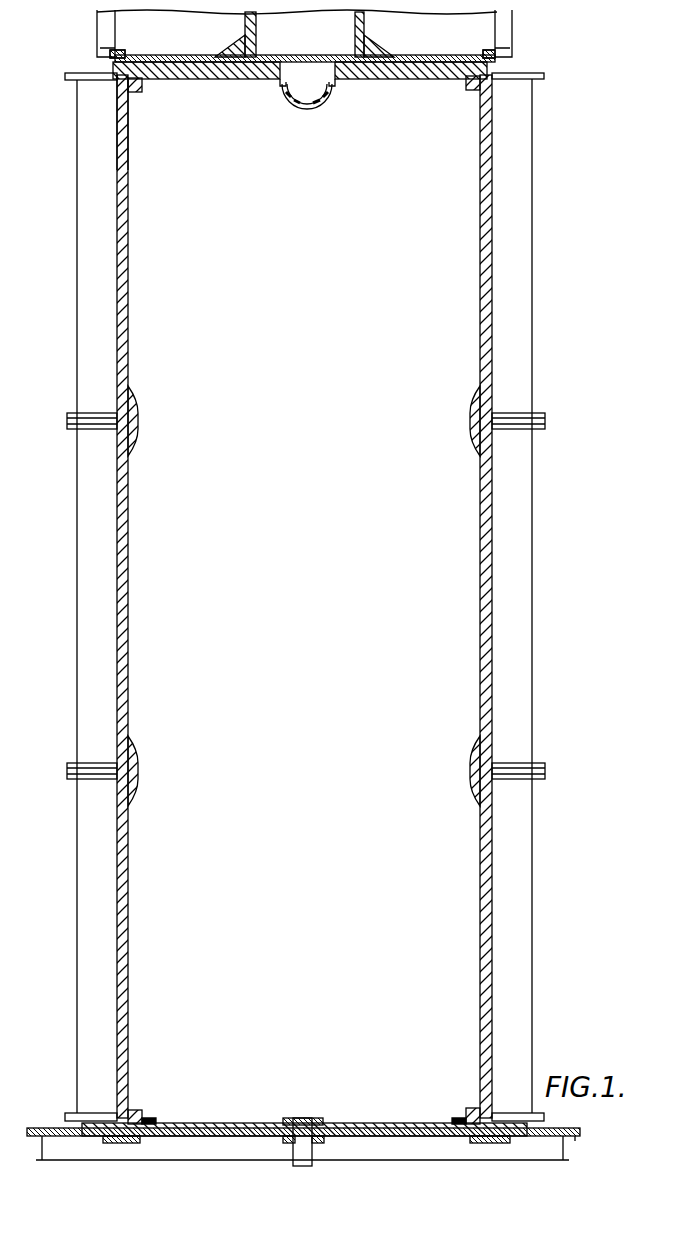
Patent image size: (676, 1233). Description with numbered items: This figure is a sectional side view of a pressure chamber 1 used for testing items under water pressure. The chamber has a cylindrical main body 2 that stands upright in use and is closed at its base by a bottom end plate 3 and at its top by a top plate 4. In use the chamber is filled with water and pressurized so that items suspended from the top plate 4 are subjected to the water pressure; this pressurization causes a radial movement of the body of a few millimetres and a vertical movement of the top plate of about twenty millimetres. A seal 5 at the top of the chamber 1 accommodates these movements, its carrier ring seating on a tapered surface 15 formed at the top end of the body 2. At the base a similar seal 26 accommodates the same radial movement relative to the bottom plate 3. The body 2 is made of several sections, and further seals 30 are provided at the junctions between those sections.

The pressure chamber 1 is at (75, 640).
The cylindrical main body 2 is at (117, 542).
The bottom end plate 3 is at (226, 1123).
The top plate 4 is at (208, 80).
The seal 5 is at (144, 94).
The tapered surface 15 is at (129, 130).
The seal 26 is at (143, 1107).
The seals 30 is at (142, 421).